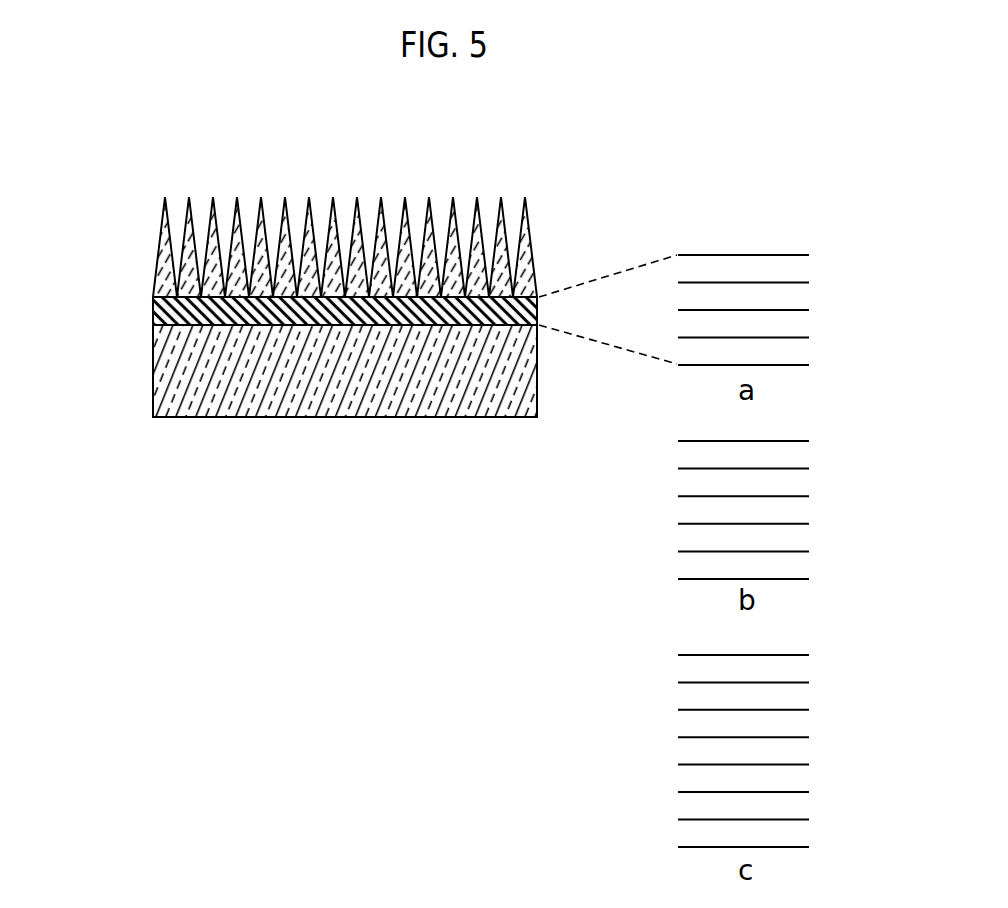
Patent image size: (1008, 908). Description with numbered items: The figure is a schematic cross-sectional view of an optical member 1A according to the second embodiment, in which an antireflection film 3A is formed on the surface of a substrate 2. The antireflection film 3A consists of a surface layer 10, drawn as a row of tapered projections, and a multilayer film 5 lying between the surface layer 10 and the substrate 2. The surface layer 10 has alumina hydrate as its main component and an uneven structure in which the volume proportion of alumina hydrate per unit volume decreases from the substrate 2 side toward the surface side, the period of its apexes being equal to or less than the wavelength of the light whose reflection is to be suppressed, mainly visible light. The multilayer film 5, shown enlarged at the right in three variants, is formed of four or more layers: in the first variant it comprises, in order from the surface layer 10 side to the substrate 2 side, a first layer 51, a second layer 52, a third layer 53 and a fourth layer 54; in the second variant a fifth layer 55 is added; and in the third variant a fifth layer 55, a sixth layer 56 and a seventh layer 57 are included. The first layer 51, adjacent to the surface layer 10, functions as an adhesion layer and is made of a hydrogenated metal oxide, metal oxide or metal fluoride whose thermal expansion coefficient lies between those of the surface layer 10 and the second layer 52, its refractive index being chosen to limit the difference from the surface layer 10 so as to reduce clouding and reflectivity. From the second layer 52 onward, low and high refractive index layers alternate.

The optical member 1A is at (556, 223).
The antireflection film 3A is at (78, 243).
The surface layer 10 is at (158, 271).
The multilayer film 5 is at (158, 311).
The substrate 2 is at (163, 377).
The first layer 51 is at (797, 274).
The second layer 52 is at (797, 301).
The third layer 53 is at (797, 329).
The fourth layer 54 is at (797, 356).
The fifth layer 55 is at (797, 568).
The sixth layer 56 is at (797, 807).
The seventh layer 57 is at (797, 835).